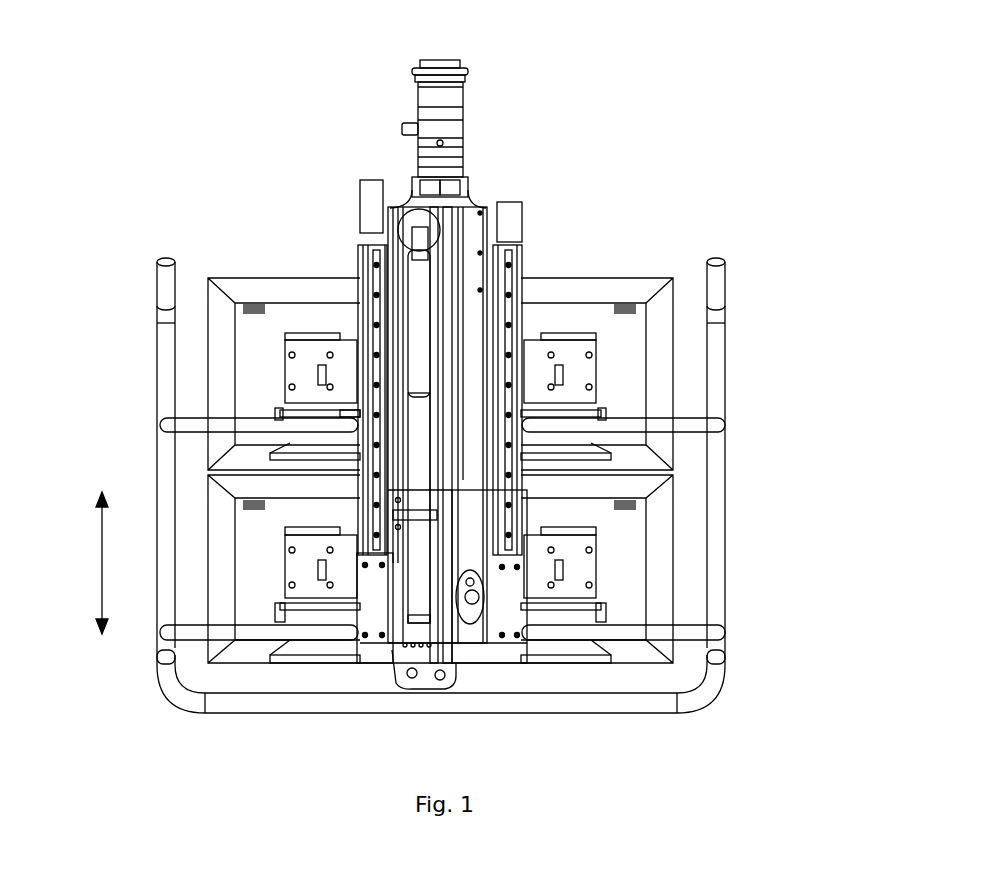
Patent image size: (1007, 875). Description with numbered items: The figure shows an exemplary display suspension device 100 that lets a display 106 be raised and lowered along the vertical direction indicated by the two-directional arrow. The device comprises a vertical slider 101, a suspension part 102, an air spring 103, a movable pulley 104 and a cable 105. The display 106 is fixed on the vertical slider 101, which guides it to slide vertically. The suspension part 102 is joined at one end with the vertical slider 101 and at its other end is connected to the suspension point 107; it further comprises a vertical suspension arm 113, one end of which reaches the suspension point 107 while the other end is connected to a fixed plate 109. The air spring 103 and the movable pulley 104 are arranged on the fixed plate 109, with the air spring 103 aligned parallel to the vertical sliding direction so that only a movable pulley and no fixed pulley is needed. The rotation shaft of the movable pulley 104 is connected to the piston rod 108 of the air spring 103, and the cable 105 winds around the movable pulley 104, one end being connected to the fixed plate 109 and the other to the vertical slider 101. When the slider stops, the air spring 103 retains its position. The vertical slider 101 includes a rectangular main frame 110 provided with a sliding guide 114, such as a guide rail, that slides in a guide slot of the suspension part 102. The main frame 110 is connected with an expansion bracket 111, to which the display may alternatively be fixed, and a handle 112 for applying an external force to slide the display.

The display suspension device 100 is at (618, 173).
The vertical slider 101 is at (350, 418).
The suspension part 102 is at (460, 100).
The air spring 103 is at (417, 597).
The movable pulley 104 is at (418, 222).
The cable 105 is at (397, 333).
The display 106 is at (612, 563).
The suspension point 107 is at (440, 63).
The piston rod 108 is at (405, 290).
The fixed plate 109 is at (485, 632).
The main frame 110 is at (360, 367).
The expansion bracket 111 is at (160, 420).
The handle 112 is at (700, 693).
The vertical suspension arm 113 is at (443, 128).
The sliding guide 114 is at (508, 270).